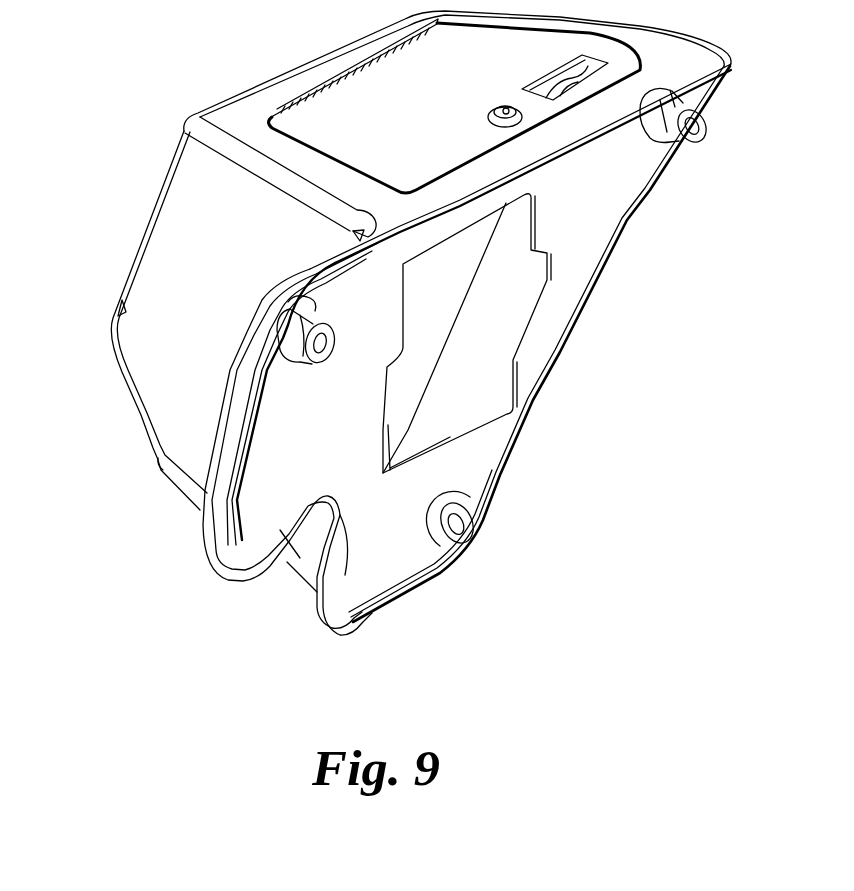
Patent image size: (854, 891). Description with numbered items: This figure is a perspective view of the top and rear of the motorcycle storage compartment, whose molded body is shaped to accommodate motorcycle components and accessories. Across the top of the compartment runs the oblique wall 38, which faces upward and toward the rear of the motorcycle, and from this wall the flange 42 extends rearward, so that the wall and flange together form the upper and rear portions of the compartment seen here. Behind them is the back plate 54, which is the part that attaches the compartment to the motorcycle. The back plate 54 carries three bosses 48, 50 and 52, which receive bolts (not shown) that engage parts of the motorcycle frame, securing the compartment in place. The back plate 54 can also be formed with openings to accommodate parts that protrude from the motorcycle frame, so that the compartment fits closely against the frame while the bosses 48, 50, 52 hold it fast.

The oblique wall 38 is at (177, 237).
The flange 42 is at (228, 380).
The boss 48 is at (665, 143).
The boss 50 is at (298, 365).
The boss 52 is at (480, 503).
The back plate 54 is at (570, 272).